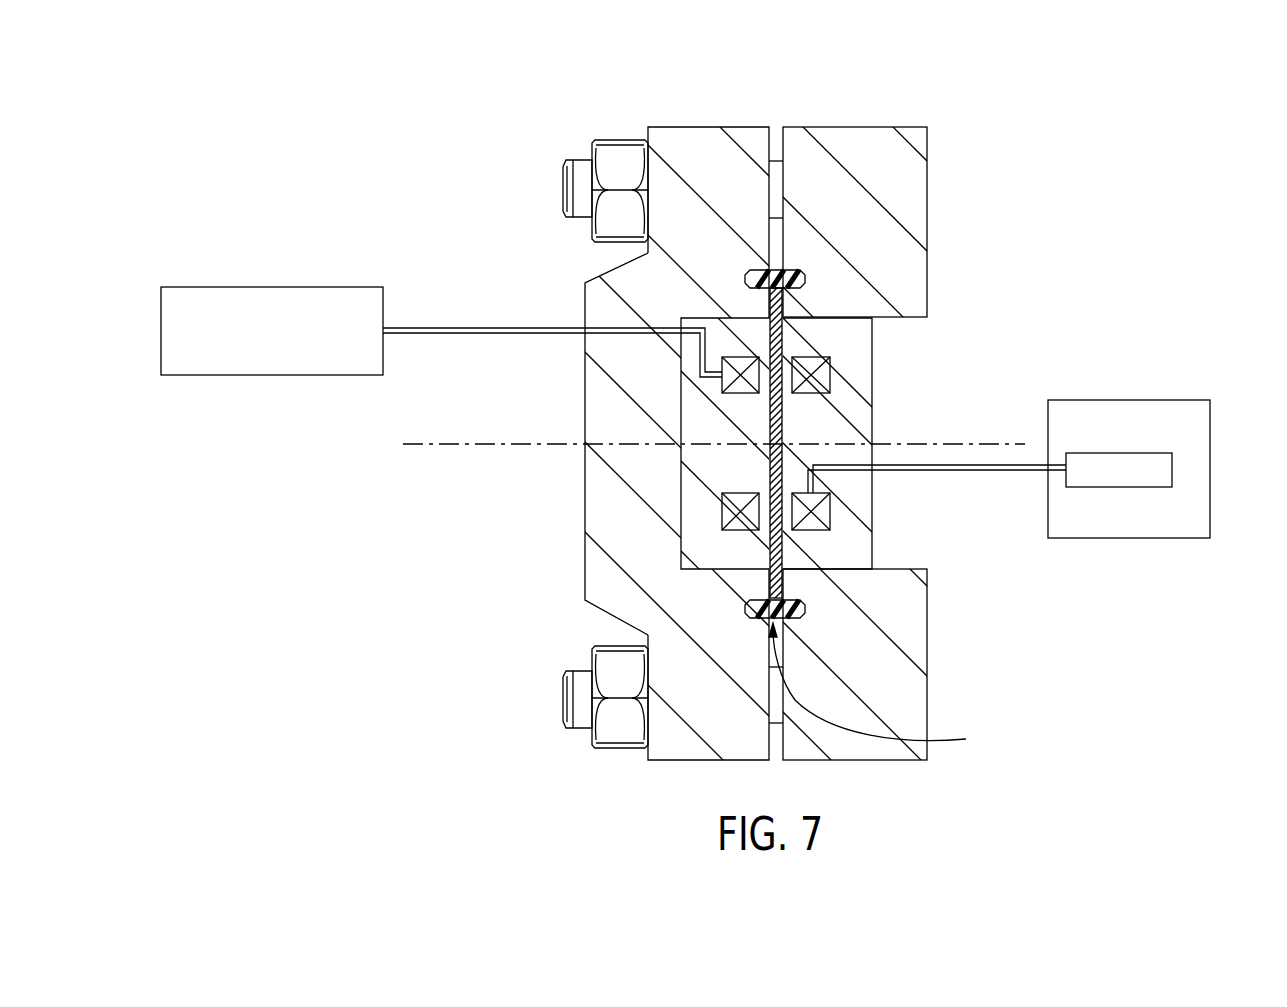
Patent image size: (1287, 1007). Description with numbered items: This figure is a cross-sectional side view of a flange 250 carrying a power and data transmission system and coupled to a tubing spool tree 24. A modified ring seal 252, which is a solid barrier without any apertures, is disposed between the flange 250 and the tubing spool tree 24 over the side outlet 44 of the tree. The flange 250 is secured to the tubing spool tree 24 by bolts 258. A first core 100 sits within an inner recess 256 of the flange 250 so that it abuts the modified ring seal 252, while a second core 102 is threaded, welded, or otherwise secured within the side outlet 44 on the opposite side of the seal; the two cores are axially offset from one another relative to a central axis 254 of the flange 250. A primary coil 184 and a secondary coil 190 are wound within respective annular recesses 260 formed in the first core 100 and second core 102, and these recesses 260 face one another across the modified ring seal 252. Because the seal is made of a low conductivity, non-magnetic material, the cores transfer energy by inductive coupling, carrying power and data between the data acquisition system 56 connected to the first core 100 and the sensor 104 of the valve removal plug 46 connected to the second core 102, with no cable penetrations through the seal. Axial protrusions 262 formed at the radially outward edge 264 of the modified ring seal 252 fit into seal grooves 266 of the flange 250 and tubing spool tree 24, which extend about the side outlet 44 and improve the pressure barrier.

The tubing spool tree 24 is at (846, 157).
The side outlet 44 is at (893, 320).
The valve removal plug 46 is at (1210, 468).
The data acquisition system 56 is at (272, 287).
The first core 100 is at (697, 470).
The second core 102 is at (833, 435).
The sensor 104 is at (1082, 487).
The primary coil 184 is at (733, 525).
The secondary coil 190 is at (832, 377).
The flange 250 is at (684, 157).
The modified ring seal 252 is at (793, 268).
The central axis 254 is at (490, 447).
The inner recess 256 is at (677, 398).
The bolts 258 is at (612, 158).
The recesses 260 is at (768, 358).
The axial protrusions 262 is at (748, 270).
The radially outward edge 264 is at (681, 475).
The seal grooves 266 is at (793, 292).